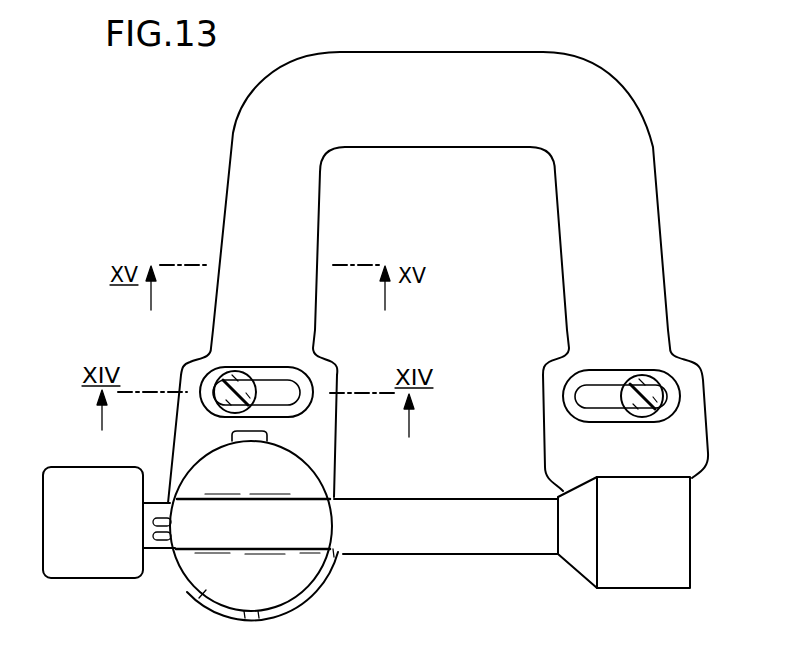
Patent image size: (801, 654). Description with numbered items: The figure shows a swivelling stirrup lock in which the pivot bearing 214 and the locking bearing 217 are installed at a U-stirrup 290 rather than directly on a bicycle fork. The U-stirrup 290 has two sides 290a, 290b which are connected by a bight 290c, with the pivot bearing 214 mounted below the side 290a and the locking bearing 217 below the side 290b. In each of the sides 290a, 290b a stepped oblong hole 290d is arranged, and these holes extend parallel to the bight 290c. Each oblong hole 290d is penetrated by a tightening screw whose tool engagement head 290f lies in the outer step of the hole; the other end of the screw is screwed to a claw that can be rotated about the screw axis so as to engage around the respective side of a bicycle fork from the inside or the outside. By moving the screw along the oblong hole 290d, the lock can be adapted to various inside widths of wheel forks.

The U-stirrup 290 is at (714, 156).
The side of the U-stirrup 290a is at (243, 200).
The side of the U-stirrup 290b is at (645, 252).
The bight 290c is at (450, 69).
The stepped oblong hole 290d is at (297, 398).
The tool engagement head 290f is at (262, 378).
The pivot bearing 214 is at (320, 608).
The locking bearing 217 is at (620, 594).